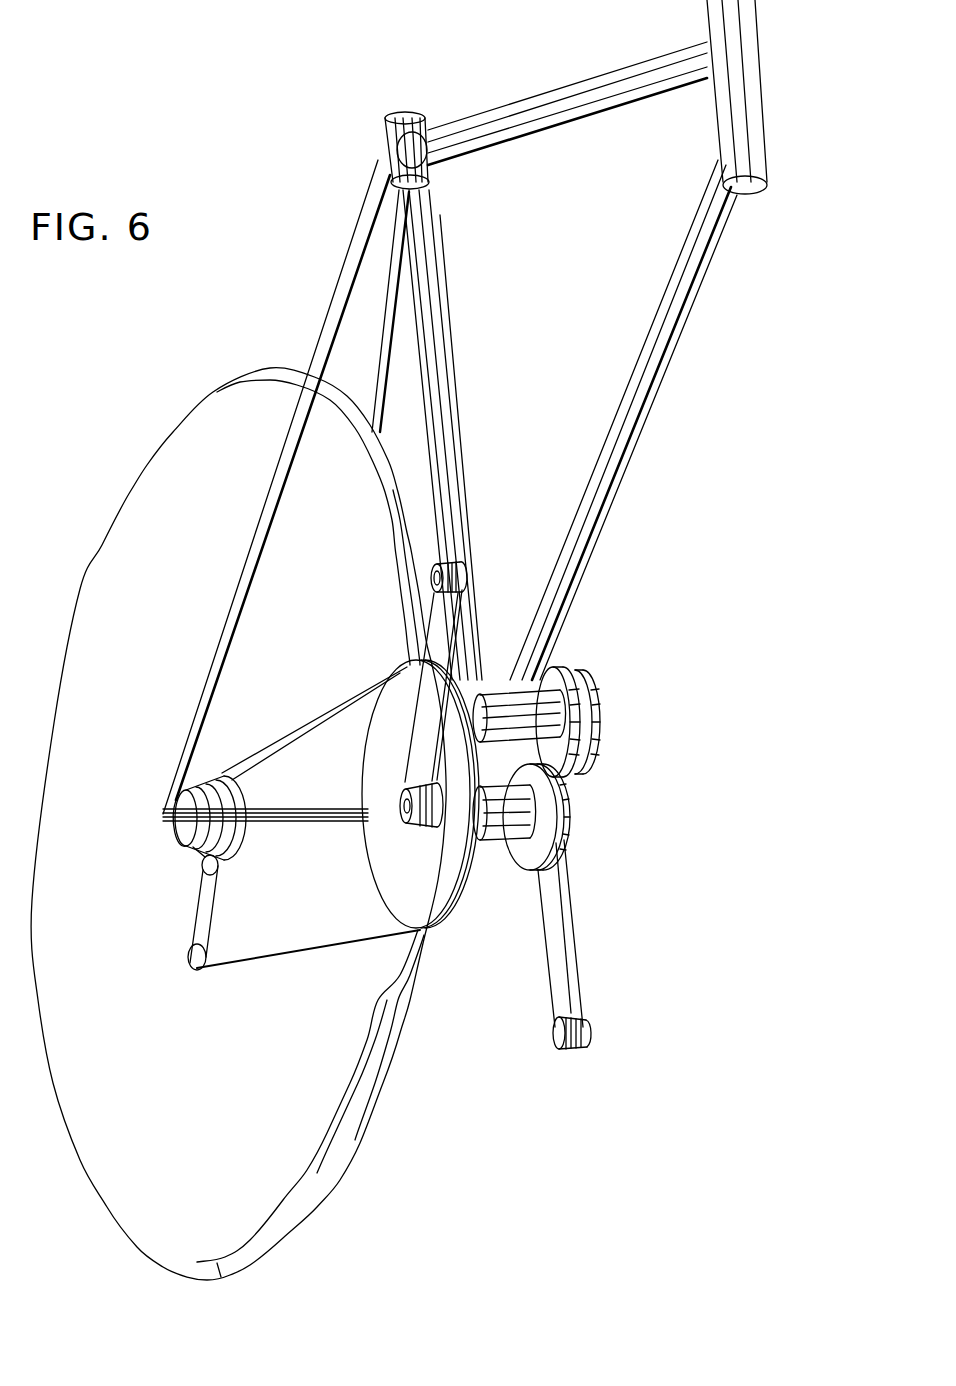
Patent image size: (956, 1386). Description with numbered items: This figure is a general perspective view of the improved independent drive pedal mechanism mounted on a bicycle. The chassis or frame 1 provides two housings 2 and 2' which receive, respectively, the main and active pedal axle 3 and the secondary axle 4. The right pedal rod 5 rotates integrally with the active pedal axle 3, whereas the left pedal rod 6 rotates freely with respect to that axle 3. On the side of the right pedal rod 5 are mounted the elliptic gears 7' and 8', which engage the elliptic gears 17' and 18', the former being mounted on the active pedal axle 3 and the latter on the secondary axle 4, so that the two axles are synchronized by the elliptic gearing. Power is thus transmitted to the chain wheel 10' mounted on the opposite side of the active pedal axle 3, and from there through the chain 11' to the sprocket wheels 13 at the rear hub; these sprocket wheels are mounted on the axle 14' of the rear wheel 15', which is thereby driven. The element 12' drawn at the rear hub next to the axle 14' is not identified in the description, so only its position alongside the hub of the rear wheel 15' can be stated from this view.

The frame 1 is at (643, 390).
The housing 2 is at (504, 845).
The housing 2' is at (519, 658).
The main and active pedal axle 3 is at (400, 808).
The secondary axle 4 is at (425, 677).
The right pedal rod 5 is at (565, 917).
The left pedal rod 6 is at (570, 1050).
The elliptic gear 7' is at (578, 817).
The elliptic gear 8' is at (530, 856).
The chain wheel 10' is at (427, 827).
The chain 11' is at (308, 973).
The hub cap 12' is at (145, 846).
The sprocket wheel 13 is at (205, 917).
The axle 14' is at (234, 798).
The rear wheel 15' is at (234, 824).
The elliptic gear 17' is at (606, 706).
The elliptic gear 18' is at (626, 722).